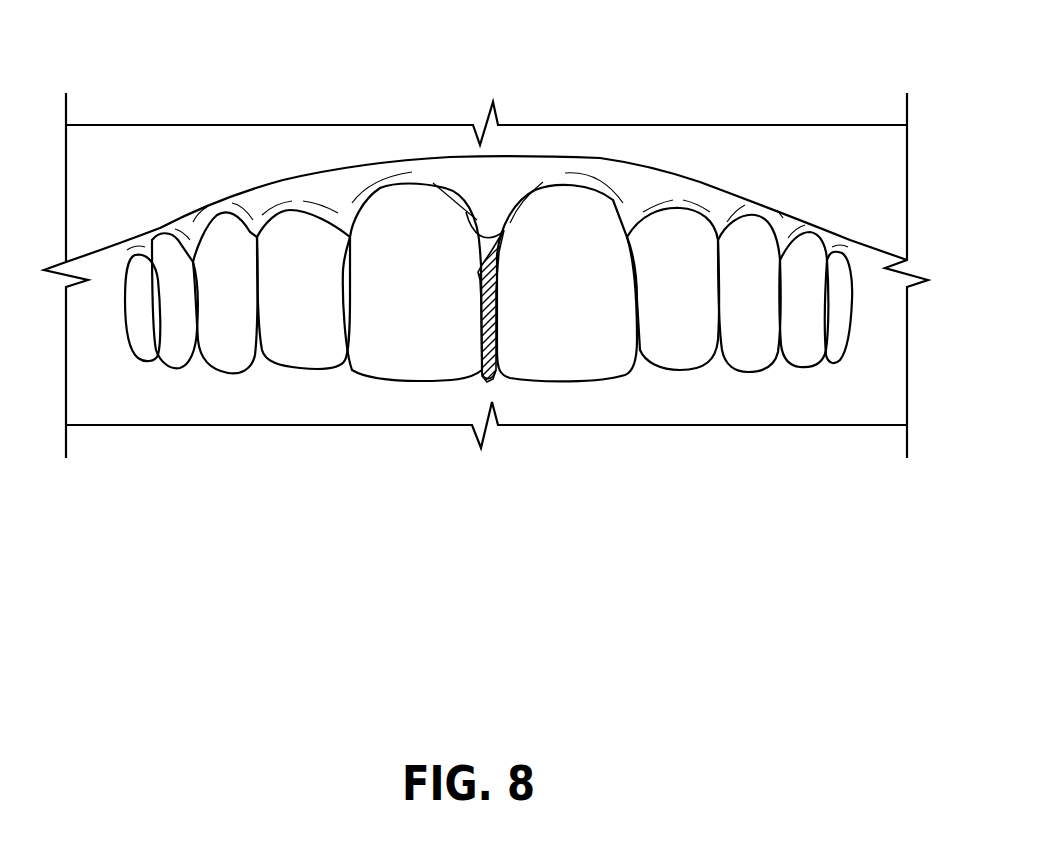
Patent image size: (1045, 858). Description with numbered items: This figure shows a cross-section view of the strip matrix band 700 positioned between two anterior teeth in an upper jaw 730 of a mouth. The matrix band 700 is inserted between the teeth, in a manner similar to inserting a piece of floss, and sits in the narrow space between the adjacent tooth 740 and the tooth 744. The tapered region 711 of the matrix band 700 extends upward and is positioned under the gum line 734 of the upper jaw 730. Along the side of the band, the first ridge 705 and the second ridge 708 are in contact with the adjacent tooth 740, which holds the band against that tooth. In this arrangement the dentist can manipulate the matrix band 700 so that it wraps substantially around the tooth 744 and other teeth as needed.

The matrix band 700 is at (479, 394).
The first ridge 705 is at (478, 371).
The second ridge 708 is at (478, 273).
The tapered region 711 is at (494, 223).
The upper jaw 730 is at (584, 84).
The gum line 734 is at (520, 193).
The adjacent tooth 740 is at (357, 373).
The tooth 744 is at (623, 372).